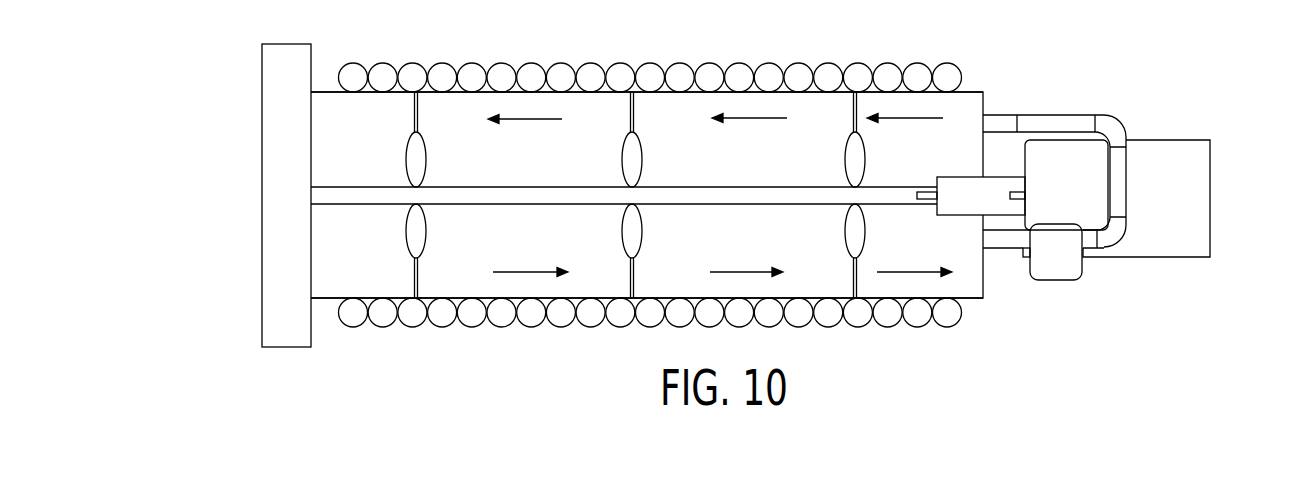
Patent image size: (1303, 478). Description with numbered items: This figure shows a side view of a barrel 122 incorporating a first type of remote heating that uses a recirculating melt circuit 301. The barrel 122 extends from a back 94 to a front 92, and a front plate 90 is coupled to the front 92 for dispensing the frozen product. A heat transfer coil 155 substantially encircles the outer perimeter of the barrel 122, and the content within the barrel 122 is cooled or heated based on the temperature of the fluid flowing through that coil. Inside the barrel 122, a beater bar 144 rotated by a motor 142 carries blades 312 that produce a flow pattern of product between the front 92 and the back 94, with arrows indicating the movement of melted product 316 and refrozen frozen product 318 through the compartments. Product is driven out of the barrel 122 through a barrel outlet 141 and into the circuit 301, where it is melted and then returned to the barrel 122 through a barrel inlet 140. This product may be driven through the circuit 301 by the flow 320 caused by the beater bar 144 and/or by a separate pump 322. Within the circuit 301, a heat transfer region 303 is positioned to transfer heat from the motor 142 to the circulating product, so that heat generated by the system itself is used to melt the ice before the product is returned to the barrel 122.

The front plate 90 is at (278, 77).
The front 92 is at (324, 322).
The back 94 is at (993, 98).
The barrel 122 is at (320, 78).
The heat transfer coil 155 is at (440, 66).
The blades 312 is at (440, 158).
The melted product 316 is at (917, 110).
The frozen product 318 is at (530, 118).
The flow 320 is at (905, 272).
The beater bar 144 is at (883, 180).
The barrel inlet 140 is at (1011, 122).
The barrel outlet 141 is at (993, 250).
The recirculating melt circuit 301 is at (1110, 100).
The heat transfer region 303 is at (1118, 193).
The motor 142 is at (1181, 134).
The pump 322 is at (1058, 293).